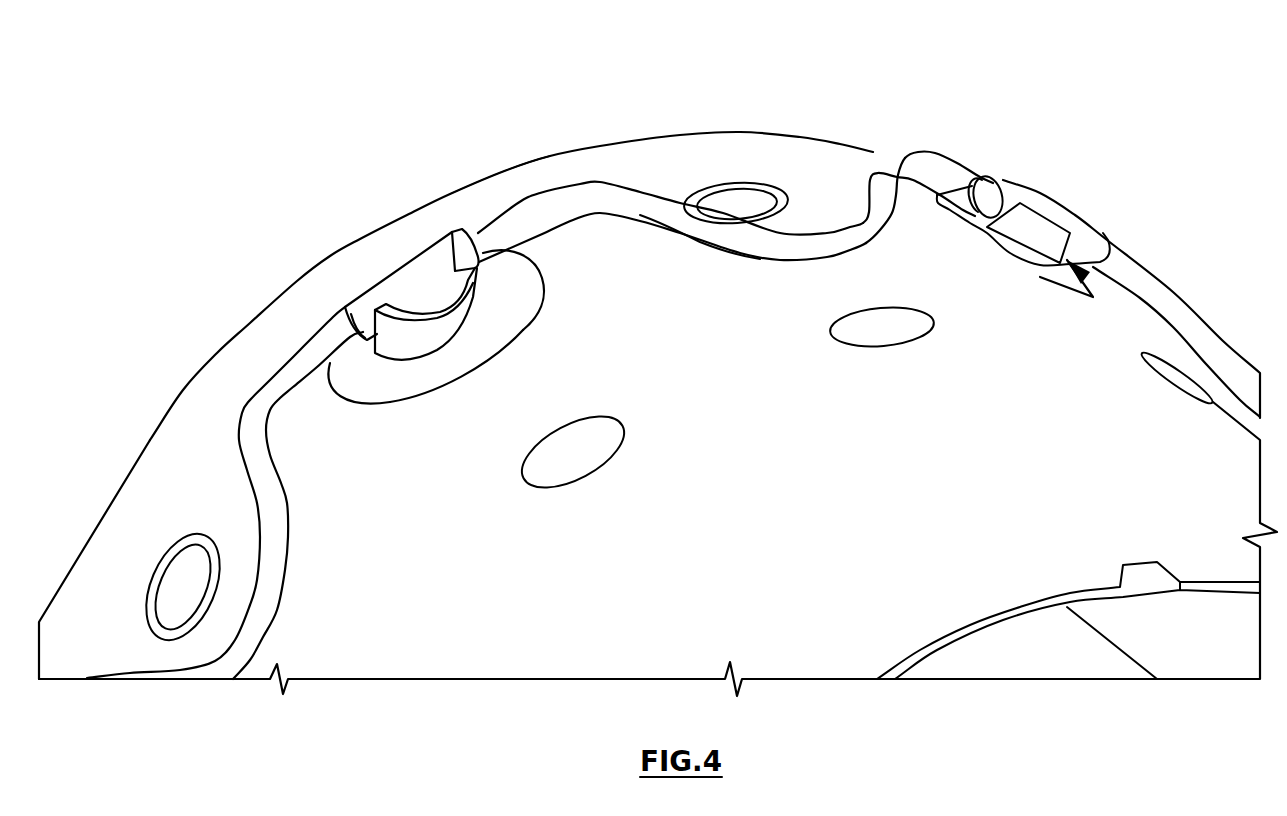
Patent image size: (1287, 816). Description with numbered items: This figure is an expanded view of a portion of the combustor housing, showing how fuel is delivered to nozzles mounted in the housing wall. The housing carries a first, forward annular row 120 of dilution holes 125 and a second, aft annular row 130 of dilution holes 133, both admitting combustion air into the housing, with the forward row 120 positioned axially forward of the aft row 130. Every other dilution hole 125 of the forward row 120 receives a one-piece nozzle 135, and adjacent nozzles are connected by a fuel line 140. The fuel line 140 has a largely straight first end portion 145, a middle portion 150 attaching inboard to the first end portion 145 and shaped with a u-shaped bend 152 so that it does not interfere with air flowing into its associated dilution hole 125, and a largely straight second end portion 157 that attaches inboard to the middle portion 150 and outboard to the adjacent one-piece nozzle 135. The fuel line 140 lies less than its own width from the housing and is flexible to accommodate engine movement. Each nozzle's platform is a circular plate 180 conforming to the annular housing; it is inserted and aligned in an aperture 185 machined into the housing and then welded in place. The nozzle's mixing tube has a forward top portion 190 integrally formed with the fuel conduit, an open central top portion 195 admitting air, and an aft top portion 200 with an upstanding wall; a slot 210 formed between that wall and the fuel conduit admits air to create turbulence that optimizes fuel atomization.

The forward annular row 120 is at (377, 498).
The dilution hole 125 is at (185, 545).
The aft annular row 130 is at (580, 497).
The dilution hole 133 is at (623, 432).
The one-piece nozzle 135 is at (1043, 253).
The fuel line 140 is at (577, 224).
The first end portion 145 is at (520, 203).
The middle portion 150 is at (833, 247).
The u-shaped bend 152 is at (773, 262).
The second end portion 157 is at (900, 163).
The circular plate 180 is at (472, 353).
The aperture 185 is at (330, 363).
The forward top portion 190 is at (362, 285).
The central top portion 195 is at (488, 277).
The aft top portion 200 is at (437, 353).
The slot 210 is at (452, 240).